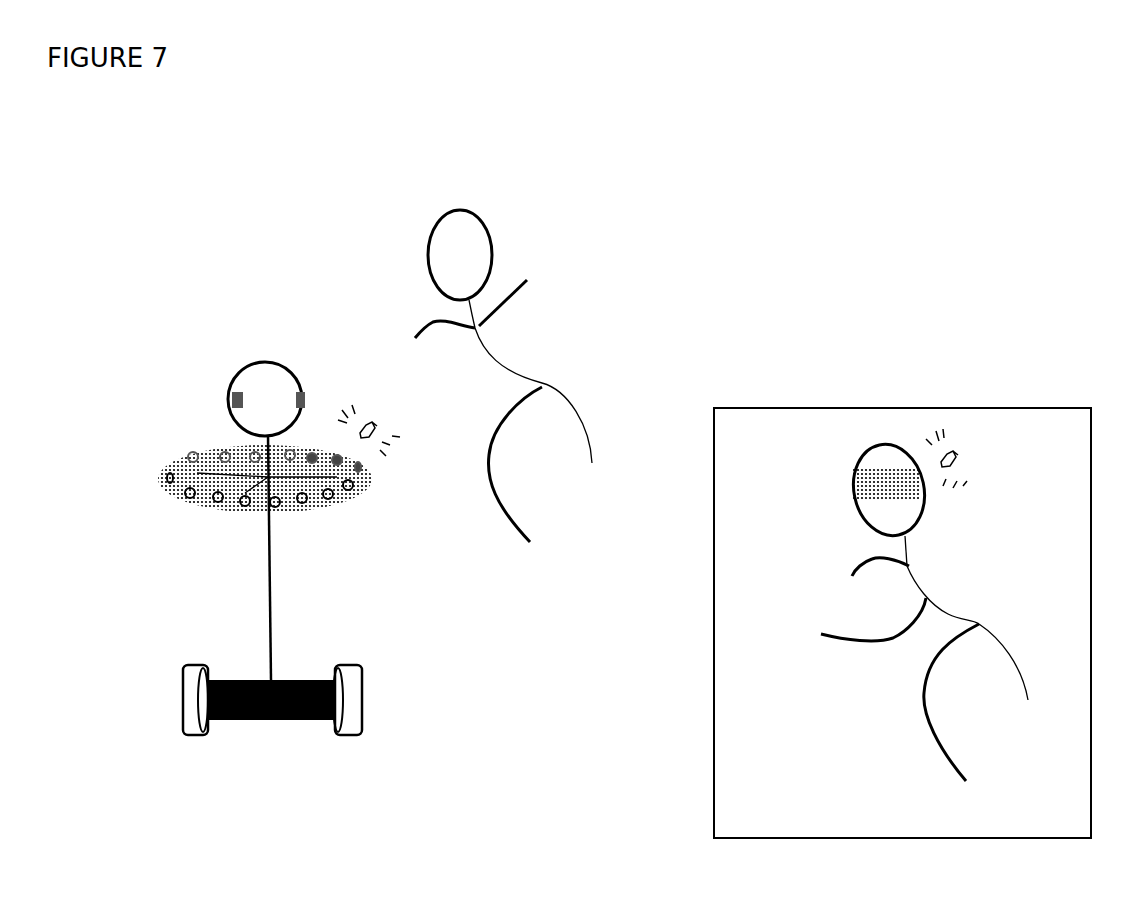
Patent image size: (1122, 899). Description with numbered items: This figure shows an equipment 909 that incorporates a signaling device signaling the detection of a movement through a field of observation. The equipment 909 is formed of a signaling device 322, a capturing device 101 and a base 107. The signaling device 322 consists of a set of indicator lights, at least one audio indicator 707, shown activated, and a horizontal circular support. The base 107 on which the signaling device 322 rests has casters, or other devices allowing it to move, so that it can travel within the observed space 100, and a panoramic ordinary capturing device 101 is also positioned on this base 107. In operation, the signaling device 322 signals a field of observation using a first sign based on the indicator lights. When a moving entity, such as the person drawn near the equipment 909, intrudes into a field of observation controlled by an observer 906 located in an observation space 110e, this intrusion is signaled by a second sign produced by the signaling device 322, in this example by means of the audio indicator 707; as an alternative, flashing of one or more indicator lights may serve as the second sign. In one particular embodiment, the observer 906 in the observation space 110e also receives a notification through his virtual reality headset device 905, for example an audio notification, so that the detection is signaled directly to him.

The observed space 100 is at (215, 503).
The capturing device 101 is at (302, 385).
The base 107 is at (273, 595).
The signaling device 322 is at (342, 502).
The audio indicator 707 is at (383, 425).
The equipment 909 is at (200, 370).
The observation space 110e is at (902, 623).
The virtual reality headset device 905 is at (921, 512).
The observer 906 is at (924, 691).